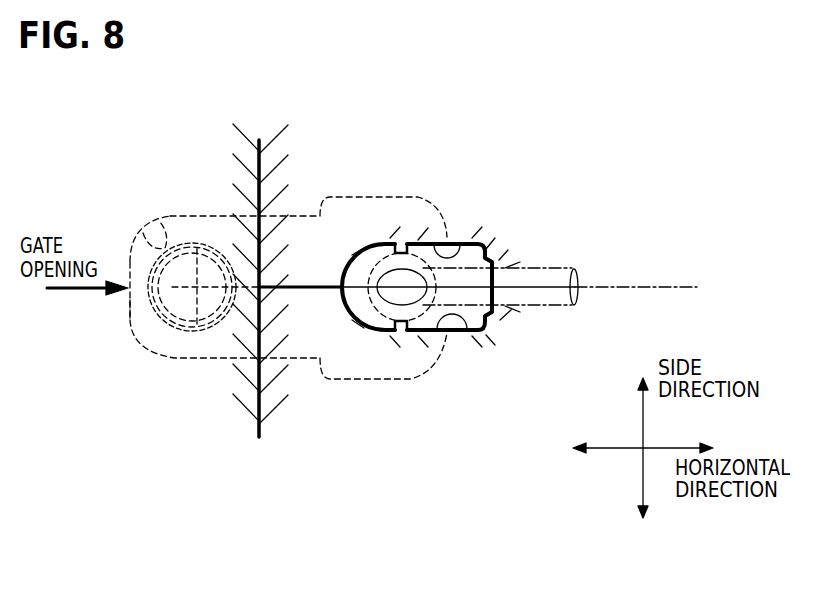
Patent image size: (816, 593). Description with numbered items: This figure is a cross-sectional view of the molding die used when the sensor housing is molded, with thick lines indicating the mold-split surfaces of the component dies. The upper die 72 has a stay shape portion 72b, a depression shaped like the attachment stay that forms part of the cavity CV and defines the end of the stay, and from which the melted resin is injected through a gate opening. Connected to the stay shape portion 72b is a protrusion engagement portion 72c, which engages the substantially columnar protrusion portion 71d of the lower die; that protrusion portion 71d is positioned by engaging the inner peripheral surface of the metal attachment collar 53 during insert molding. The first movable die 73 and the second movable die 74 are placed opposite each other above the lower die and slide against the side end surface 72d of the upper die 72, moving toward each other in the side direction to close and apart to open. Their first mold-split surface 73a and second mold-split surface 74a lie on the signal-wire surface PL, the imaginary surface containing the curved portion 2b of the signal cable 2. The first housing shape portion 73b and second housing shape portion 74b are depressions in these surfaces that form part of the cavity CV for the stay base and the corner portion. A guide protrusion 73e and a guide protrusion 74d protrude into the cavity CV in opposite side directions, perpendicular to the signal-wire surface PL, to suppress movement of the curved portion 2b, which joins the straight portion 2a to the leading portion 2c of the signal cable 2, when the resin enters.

The upper die 72 is at (182, 415).
The stay shape portion 72b is at (165, 218).
The protrusion engagement portion 72c is at (200, 252).
The protrusion portion 71d is at (167, 320).
The attachment collar 53 is at (141, 338).
The side end surface 72d is at (284, 432).
The second movable die 74 is at (452, 153).
The second mold-split surface 74a is at (292, 291).
The second housing shape portion 74b is at (457, 243).
The guide protrusion 74d is at (386, 243).
The first movable die 73 is at (423, 423).
The first mold-split surface 73a is at (305, 293).
The first housing shape portion 73b is at (470, 333).
The guide protrusion 73e is at (385, 332).
The signal cable 2 is at (576, 293).
The straight portion 2a is at (363, 240).
The curved portion 2b is at (375, 325).
The leading portion 2c is at (493, 331).
The cavity CV is at (483, 243).
The signal-wire surface PL is at (697, 287).